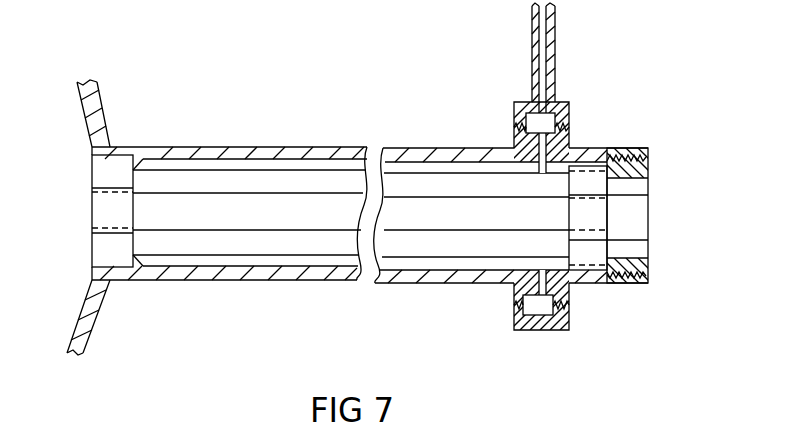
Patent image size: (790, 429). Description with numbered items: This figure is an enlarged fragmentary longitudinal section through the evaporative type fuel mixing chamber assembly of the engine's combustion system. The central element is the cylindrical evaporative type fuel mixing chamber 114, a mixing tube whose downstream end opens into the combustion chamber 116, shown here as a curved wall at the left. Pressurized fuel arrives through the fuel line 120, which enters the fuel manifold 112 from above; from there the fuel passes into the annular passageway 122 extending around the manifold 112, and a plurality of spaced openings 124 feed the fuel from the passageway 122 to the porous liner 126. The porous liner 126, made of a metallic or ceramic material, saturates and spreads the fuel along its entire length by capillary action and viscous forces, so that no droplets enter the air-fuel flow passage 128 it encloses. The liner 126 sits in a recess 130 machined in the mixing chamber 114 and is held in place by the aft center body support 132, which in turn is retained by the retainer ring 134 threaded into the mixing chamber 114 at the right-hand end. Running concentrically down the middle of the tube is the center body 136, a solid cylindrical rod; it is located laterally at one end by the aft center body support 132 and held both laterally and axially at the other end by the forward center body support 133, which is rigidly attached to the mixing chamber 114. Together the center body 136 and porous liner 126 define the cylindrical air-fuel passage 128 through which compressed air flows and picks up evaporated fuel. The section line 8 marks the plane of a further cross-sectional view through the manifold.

The section line 8- 8 is at (424, 145).
The fuel manifold 112 is at (572, 110).
The evaporative type fuel mixing chamber 114 is at (247, 134).
The combustion chamber 116 is at (100, 92).
The fuel line 120 is at (556, 32).
The annular passageway 122 is at (553, 304).
The spaced openings 124 is at (548, 142).
The porous liner 126 is at (316, 262).
The air-fuel flow passage 128 is at (191, 174).
The recess 130 is at (233, 281).
The aft center body support 132 is at (608, 182).
The forward center body support 133 is at (92, 165).
The retainer ring 134 is at (650, 164).
The center body 136 is at (321, 193).